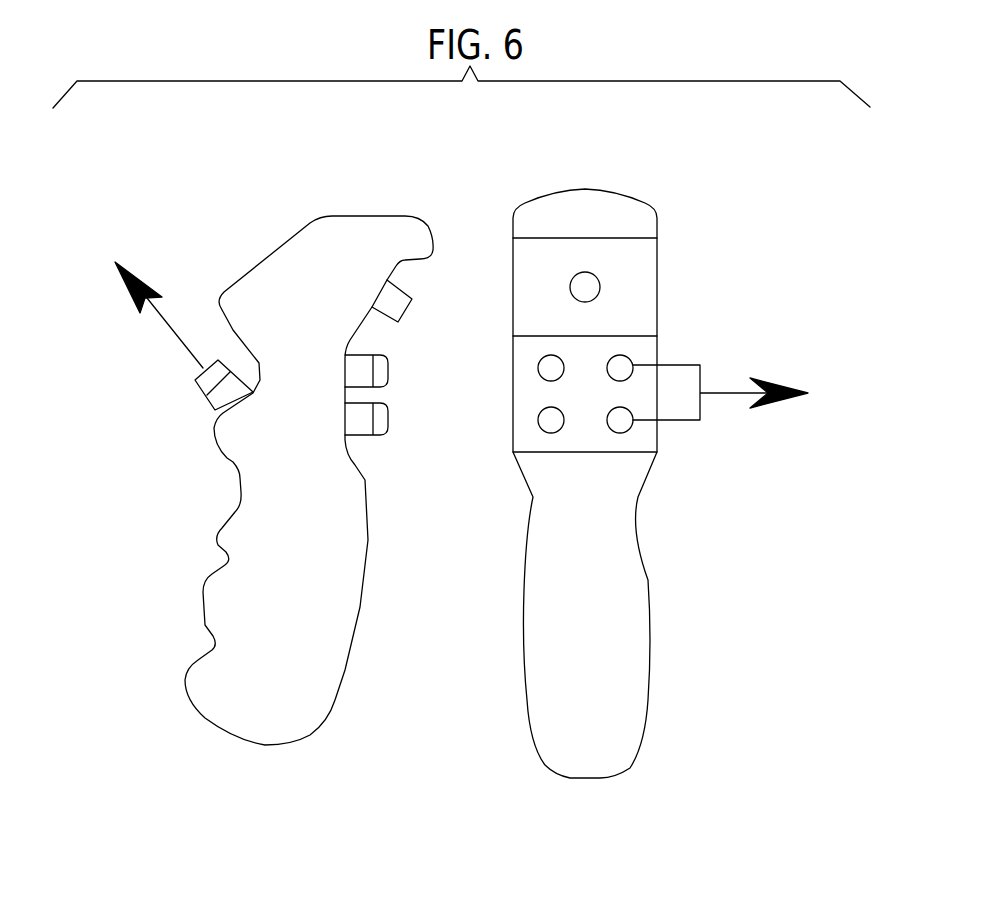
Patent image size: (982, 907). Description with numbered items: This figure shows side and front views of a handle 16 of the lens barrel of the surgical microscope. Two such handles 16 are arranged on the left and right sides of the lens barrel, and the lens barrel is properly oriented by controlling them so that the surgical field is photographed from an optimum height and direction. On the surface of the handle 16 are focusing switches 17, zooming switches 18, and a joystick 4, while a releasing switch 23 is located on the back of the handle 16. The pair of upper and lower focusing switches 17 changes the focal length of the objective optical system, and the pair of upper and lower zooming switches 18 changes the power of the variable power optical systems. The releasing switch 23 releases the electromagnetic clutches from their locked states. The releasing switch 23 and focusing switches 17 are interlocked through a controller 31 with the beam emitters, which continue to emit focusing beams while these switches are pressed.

The joystick 4 is at (405, 316).
The handle 16 is at (360, 615).
The focusing switch 17 is at (633, 370).
The zooming switch 18 is at (388, 407).
The releasing switch 23 is at (207, 414).
The controller 31 is at (466, 324).